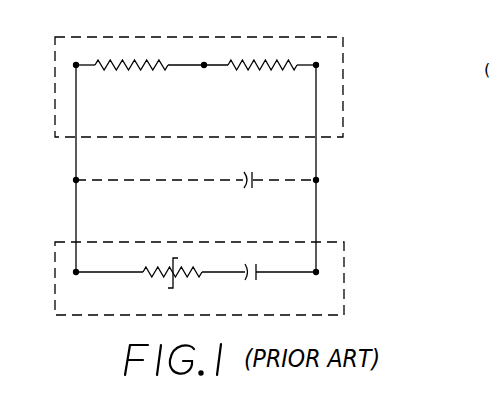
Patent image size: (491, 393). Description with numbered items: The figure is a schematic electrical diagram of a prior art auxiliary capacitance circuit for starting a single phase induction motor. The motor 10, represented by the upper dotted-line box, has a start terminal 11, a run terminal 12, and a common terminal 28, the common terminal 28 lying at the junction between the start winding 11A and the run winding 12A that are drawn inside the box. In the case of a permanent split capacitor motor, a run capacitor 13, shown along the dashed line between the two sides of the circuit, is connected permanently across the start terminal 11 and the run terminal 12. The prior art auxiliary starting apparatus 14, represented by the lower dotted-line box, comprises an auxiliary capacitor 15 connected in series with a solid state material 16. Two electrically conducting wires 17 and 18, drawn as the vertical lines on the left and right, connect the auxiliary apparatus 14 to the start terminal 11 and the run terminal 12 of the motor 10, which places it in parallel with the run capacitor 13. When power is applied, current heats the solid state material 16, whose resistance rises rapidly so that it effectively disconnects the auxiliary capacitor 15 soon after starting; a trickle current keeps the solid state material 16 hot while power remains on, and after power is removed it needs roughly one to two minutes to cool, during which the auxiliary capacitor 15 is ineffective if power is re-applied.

The motor 10 is at (364, 32).
The start terminal 11 is at (77, 63).
The start winding 11A is at (137, 60).
The common terminal 28 is at (204, 62).
The run winding 12A is at (258, 61).
The run terminal 12 is at (317, 63).
The run capacitor 13 is at (258, 171).
The auxiliary starting apparatus 14 is at (348, 296).
The auxiliary capacitor 15 is at (260, 278).
The solid state material 16 is at (148, 275).
The electrically conducting wire 17 is at (76, 217).
The electrically conducting wire 18 is at (316, 195).